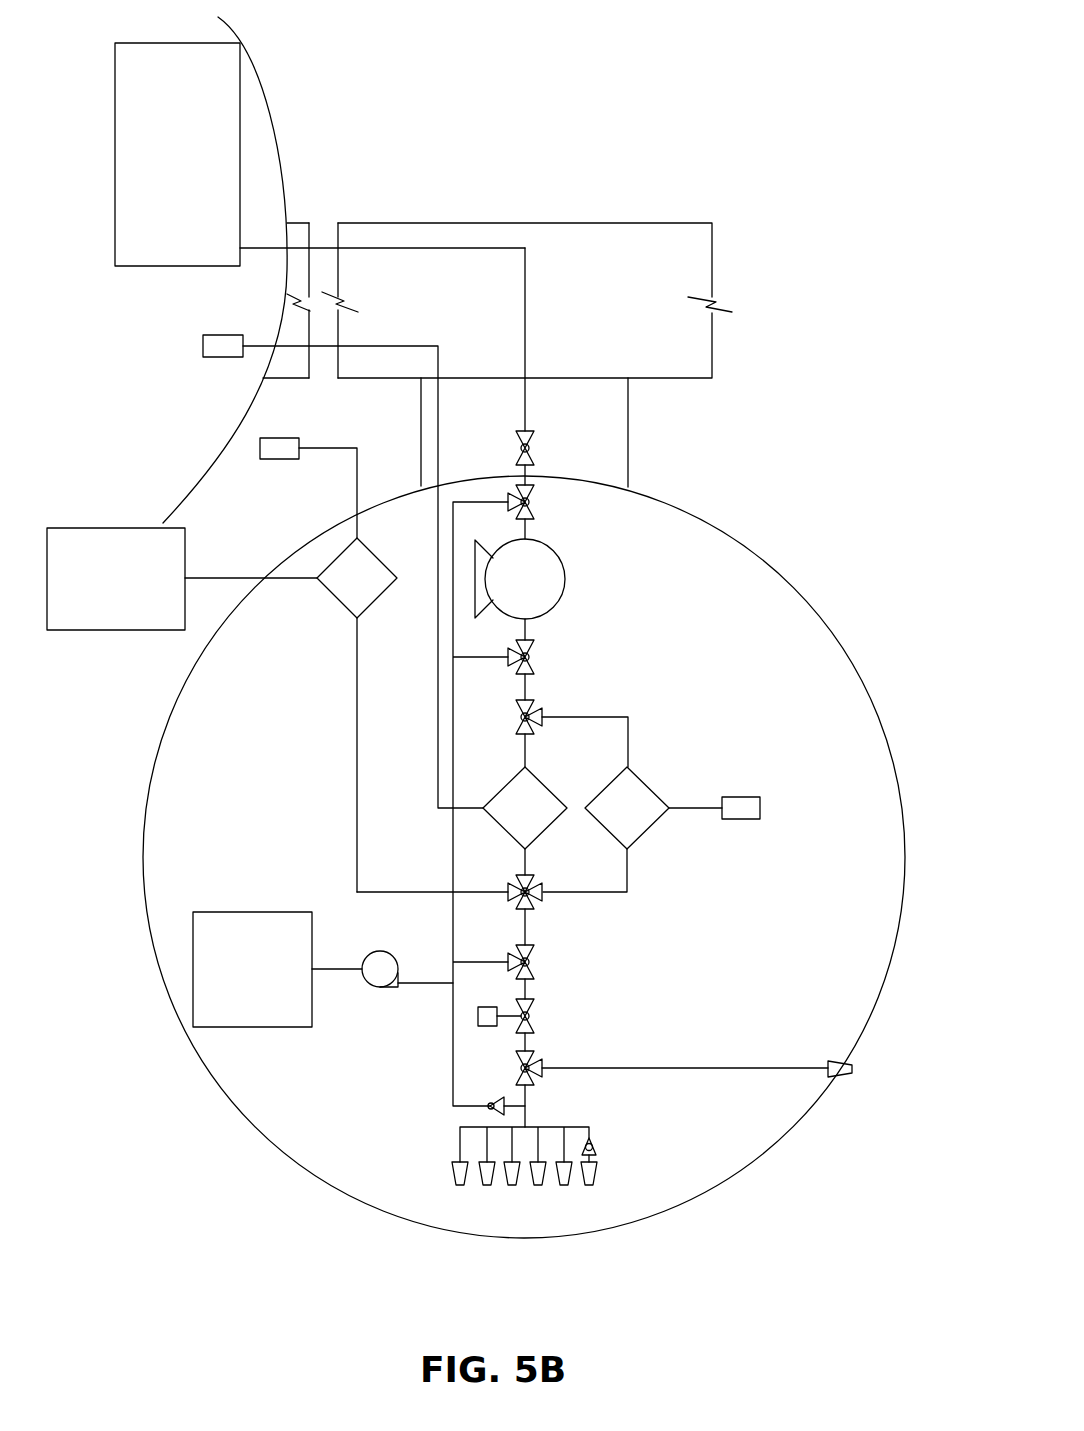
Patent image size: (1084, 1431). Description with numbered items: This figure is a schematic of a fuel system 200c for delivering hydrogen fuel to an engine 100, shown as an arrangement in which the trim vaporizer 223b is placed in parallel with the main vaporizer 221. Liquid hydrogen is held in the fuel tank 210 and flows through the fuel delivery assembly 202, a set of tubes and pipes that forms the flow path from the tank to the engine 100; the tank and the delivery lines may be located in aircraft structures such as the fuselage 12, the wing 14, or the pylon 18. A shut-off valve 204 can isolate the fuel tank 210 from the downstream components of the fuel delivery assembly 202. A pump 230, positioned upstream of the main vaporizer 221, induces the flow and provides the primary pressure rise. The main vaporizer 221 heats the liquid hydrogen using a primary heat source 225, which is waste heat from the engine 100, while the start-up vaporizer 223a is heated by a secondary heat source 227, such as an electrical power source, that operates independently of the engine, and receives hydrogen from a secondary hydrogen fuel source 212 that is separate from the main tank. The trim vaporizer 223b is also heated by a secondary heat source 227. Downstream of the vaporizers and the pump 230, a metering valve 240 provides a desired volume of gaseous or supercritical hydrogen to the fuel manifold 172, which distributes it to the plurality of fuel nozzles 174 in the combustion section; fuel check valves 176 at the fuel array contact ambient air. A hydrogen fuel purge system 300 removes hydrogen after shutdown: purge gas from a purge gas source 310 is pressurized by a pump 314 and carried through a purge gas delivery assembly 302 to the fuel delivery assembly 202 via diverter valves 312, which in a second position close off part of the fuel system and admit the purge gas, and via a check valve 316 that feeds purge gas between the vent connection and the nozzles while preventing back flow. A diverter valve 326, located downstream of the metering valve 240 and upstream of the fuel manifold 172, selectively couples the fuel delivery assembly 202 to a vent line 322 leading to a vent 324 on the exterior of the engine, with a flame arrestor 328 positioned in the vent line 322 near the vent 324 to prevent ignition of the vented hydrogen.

The fuselage 12 is at (270, 112).
The wing 14 is at (697, 352).
The pylon 18 is at (612, 415).
The engine 100 is at (745, 563).
The fuel manifold 172 is at (460, 1130).
The fuel nozzles 174 is at (452, 1165).
The fuel check valves 176 is at (597, 1148).
The fuel system 200c is at (467, 205).
The fuel delivery assembly 202 is at (372, 243).
The shut-off valve 204 is at (516, 446).
The fuel tank 210 is at (178, 43).
The secondary hydrogen fuel source 212 is at (118, 528).
The main vaporizer 221 is at (648, 783).
The start-up vaporizer 223a is at (328, 600).
The trim vaporizer 223b is at (530, 765).
The primary heat source 225 is at (761, 803).
The secondary heat source 227 is at (203, 345).
The pump 230 is at (566, 563).
The metering valve 240 is at (530, 1027).
The hydrogen fuel purge system 300 is at (166, 863).
The purge gas delivery assembly 302 is at (452, 950).
The purge gas source 310 is at (252, 912).
The diverter valve 312 is at (533, 494).
The pump 314 is at (382, 988).
The check valve 316 is at (490, 1110).
The vent line 322 is at (690, 1068).
The vent 324 is at (872, 1071).
The diverter valve 326 is at (533, 1083).
The flame arrestor 328 is at (837, 1080).